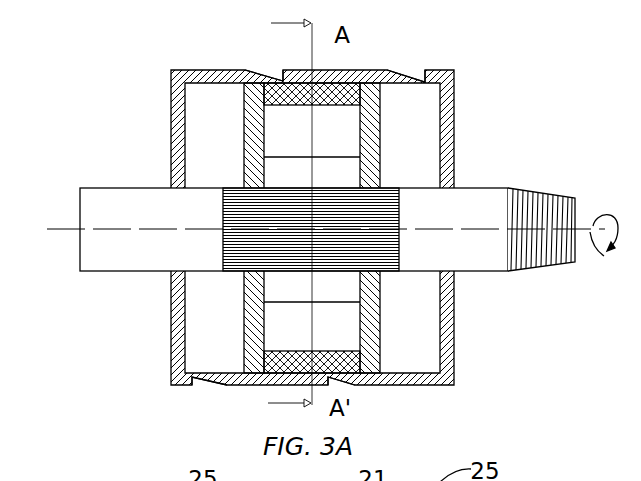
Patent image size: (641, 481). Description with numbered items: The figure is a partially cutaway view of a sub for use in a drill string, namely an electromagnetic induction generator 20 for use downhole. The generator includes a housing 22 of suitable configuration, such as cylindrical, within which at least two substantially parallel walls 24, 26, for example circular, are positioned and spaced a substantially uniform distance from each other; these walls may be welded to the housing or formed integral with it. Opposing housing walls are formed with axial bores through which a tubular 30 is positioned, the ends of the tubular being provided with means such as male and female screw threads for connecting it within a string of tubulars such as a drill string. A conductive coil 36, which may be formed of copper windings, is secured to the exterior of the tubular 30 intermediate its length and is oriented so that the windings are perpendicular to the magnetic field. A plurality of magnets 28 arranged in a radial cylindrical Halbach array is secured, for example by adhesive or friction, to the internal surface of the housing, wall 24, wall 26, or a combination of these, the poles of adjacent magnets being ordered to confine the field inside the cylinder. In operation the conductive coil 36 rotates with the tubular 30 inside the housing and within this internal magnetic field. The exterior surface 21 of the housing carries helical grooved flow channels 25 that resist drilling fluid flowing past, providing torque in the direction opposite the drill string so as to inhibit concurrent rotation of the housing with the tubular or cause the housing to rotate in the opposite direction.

The electromagnetic induction generator 20 is at (451, 115).
The exterior surface 21 is at (170, 368).
The housing 22 is at (321, 77).
The wall 24 is at (252, 336).
The grooved flow channels 25 is at (285, 78).
The wall 26 is at (372, 325).
The magnets 28 is at (312, 222).
The tubular 30 is at (497, 188).
The conductive coil 36 is at (248, 247).